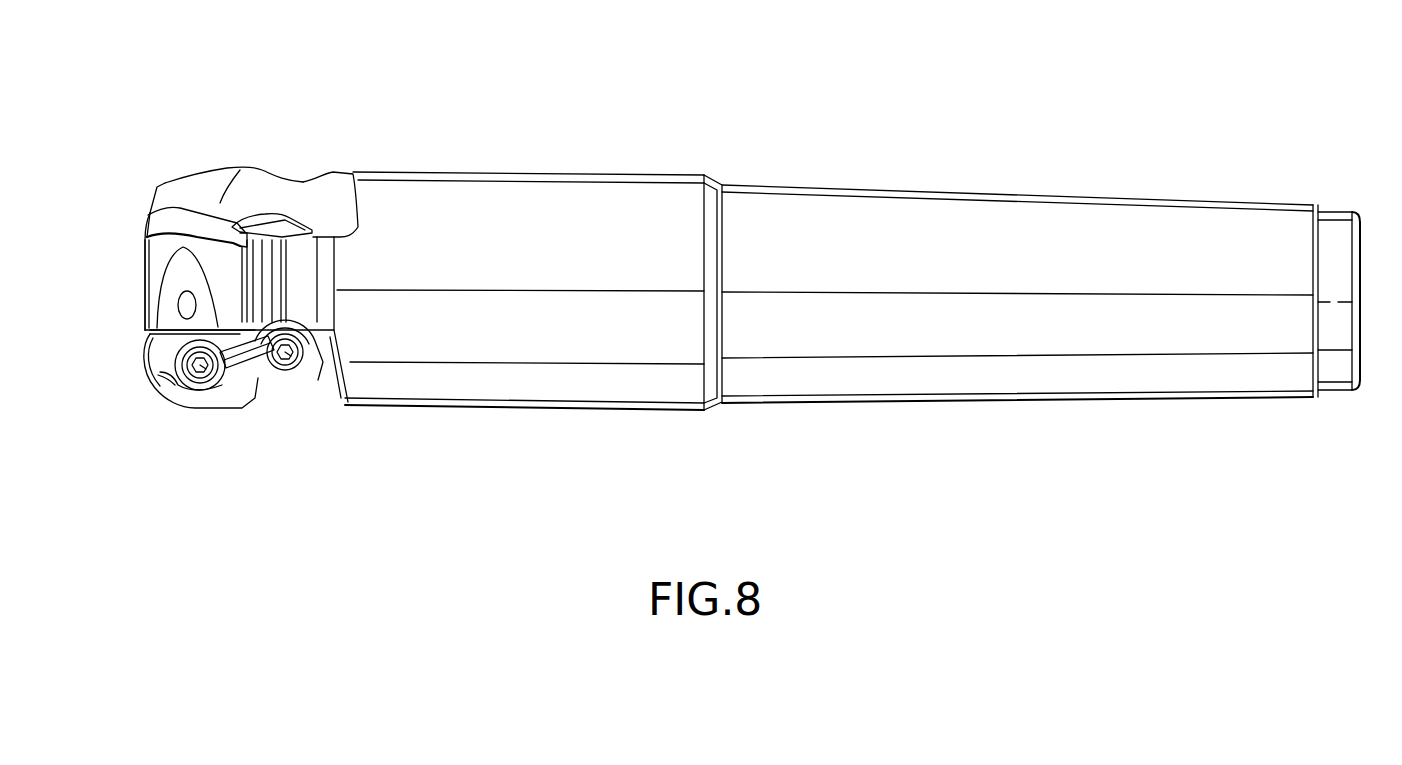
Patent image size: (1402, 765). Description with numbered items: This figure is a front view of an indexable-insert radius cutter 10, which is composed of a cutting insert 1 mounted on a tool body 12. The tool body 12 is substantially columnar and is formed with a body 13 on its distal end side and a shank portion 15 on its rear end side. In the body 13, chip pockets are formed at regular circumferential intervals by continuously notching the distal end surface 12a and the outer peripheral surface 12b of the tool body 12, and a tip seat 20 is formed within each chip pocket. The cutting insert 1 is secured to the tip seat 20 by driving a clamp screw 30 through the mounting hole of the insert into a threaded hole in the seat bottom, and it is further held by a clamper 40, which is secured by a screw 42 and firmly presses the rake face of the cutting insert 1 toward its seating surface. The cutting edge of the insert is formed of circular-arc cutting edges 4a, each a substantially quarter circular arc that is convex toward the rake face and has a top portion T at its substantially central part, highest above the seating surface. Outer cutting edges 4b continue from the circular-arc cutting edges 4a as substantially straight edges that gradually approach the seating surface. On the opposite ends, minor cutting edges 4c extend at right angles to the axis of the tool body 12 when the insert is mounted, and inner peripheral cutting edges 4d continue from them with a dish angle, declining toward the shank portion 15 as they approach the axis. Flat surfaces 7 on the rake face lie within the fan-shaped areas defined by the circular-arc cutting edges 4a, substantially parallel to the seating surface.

The radius cutter 10 is at (932, 95).
The tool body 12 is at (1098, 228).
The distal end surface 12a is at (147, 278).
The outer peripheral surface 12b is at (178, 180).
The body 13 is at (307, 267).
The shank portion 15 is at (1046, 372).
The tip seat 20 is at (140, 195).
The cutting insert 1 is at (198, 192).
The circular-arc cutting edge 4a is at (163, 185).
The outer cutting edge 4b is at (222, 205).
The minor cutting edge 4c is at (143, 352).
The inner peripheral cutting edge 4d is at (150, 333).
The flat surface 7 is at (165, 383).
The clamp screw 30 is at (185, 383).
The clamper 40 is at (285, 213).
The screw 42 is at (285, 372).
The top portion T is at (157, 390).